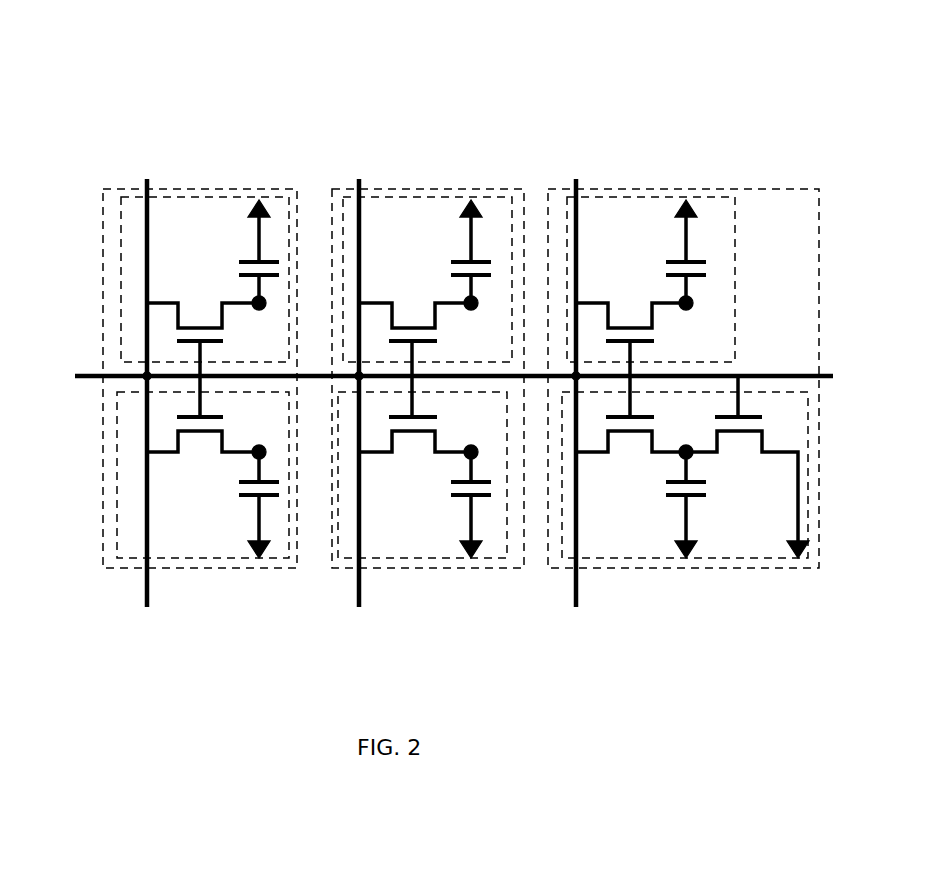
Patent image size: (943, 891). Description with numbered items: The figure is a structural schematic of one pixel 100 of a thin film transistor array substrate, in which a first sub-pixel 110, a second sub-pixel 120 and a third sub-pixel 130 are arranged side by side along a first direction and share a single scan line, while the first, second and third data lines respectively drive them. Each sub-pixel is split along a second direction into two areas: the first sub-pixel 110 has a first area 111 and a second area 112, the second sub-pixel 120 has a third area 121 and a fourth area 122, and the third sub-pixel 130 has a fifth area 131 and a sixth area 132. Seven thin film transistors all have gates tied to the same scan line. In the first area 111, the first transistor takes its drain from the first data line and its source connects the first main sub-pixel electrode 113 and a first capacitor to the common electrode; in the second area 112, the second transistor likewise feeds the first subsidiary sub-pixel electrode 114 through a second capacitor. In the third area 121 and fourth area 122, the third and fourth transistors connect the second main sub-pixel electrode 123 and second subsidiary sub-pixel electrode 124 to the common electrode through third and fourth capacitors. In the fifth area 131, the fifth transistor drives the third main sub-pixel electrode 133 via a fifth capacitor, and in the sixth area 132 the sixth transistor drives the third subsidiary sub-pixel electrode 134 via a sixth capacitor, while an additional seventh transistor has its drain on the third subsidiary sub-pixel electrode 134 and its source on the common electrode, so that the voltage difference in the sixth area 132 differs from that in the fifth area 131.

The pixel 100 is at (450, 48).
The first sub-pixel 110 is at (212, 188).
The first area 111 is at (182, 197).
The second area 112 is at (200, 558).
The first main sub-pixel electrode 113 is at (260, 310).
The first subsidiary sub-pixel electrode 114 is at (258, 446).
The second sub-pixel 120 is at (452, 188).
The third area 121 is at (428, 195).
The fourth area 122 is at (415, 558).
The second main sub-pixel electrode 123 is at (472, 310).
The second subsidiary sub-pixel electrode 124 is at (470, 446).
The third sub-pixel 130 is at (708, 189).
The fifth area 131 is at (658, 195).
The sixth area 132 is at (647, 558).
The third main sub-pixel electrode 133 is at (687, 310).
The third subsidiary sub-pixel electrode 134 is at (686, 446).